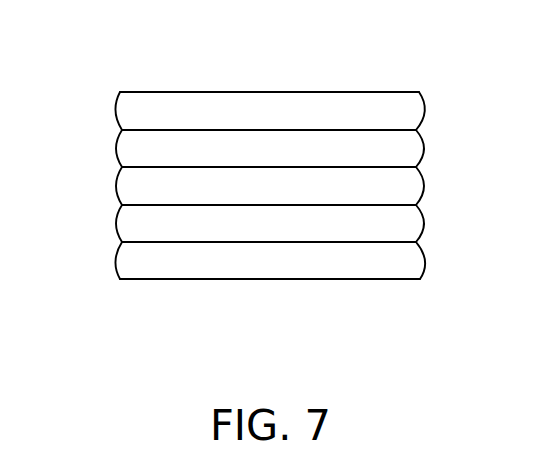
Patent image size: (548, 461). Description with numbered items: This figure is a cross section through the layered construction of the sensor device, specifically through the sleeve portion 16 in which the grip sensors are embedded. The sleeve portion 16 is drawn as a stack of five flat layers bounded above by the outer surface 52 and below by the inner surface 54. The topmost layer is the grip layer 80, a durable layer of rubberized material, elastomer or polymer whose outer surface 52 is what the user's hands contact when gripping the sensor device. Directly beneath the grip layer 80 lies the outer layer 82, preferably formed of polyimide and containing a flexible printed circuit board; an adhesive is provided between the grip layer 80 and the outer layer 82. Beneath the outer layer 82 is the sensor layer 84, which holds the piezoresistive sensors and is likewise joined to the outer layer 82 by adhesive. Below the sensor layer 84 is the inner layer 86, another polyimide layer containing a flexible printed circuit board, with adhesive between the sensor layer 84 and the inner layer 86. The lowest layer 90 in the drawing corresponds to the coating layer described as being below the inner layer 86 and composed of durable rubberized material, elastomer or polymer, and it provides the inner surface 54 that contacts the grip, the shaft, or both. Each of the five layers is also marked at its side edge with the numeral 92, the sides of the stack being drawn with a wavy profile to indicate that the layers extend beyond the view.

The sleeve portion 16 is at (124, 69).
The outer surface 52 is at (252, 91).
The inner surface 54 is at (252, 279).
The grip layer 80 is at (405, 114).
The outer layer 82 is at (405, 151).
The sensor layer 84 is at (405, 189).
The inner layer 86 is at (405, 226).
The fifth layer 90 is at (405, 264).
The layer edge 92 is at (132, 114).